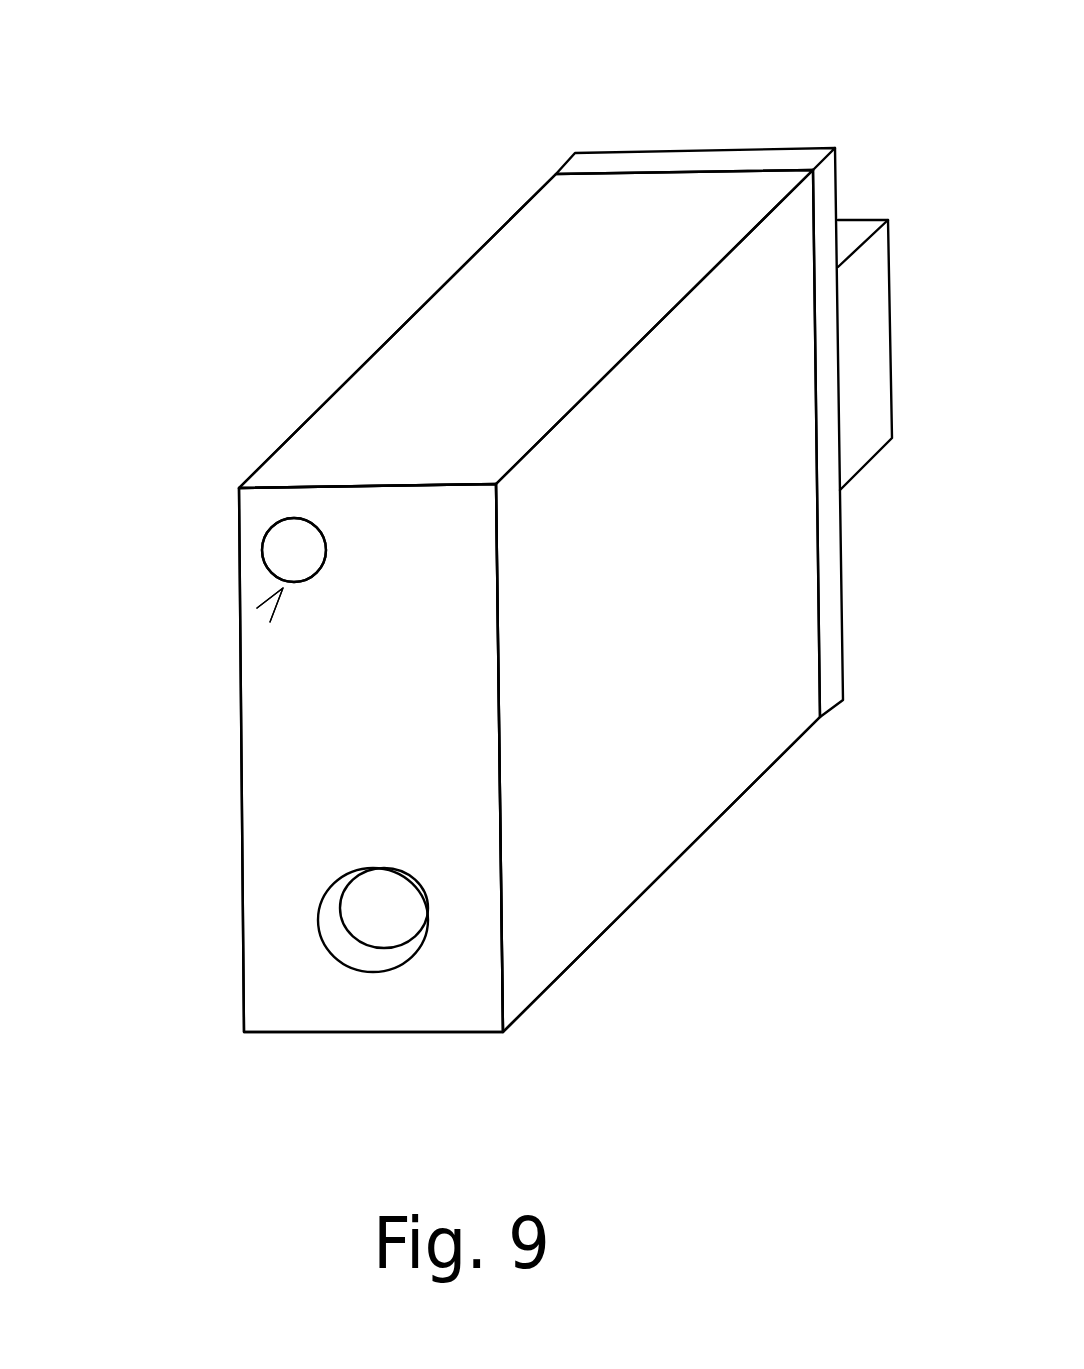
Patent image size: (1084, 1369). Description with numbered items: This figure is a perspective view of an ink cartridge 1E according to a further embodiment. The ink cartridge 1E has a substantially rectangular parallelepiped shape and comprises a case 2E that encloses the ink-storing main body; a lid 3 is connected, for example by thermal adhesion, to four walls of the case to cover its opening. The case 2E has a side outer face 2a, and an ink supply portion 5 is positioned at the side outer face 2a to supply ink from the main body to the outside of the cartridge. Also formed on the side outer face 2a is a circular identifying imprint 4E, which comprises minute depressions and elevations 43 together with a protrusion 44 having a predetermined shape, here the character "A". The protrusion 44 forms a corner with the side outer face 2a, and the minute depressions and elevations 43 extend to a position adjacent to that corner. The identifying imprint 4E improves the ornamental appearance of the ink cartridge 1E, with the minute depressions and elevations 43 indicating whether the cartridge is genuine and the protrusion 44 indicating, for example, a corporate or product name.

The ink cartridge 1E is at (313, 180).
The case 2E is at (515, 313).
The side outer face 2a is at (293, 828).
The lid 3 is at (618, 160).
The minute depressions and elevations 43 is at (267, 542).
The protrusion 44 is at (272, 565).
The identifying imprint 4E is at (262, 620).
The ink supply portion 5 is at (373, 918).